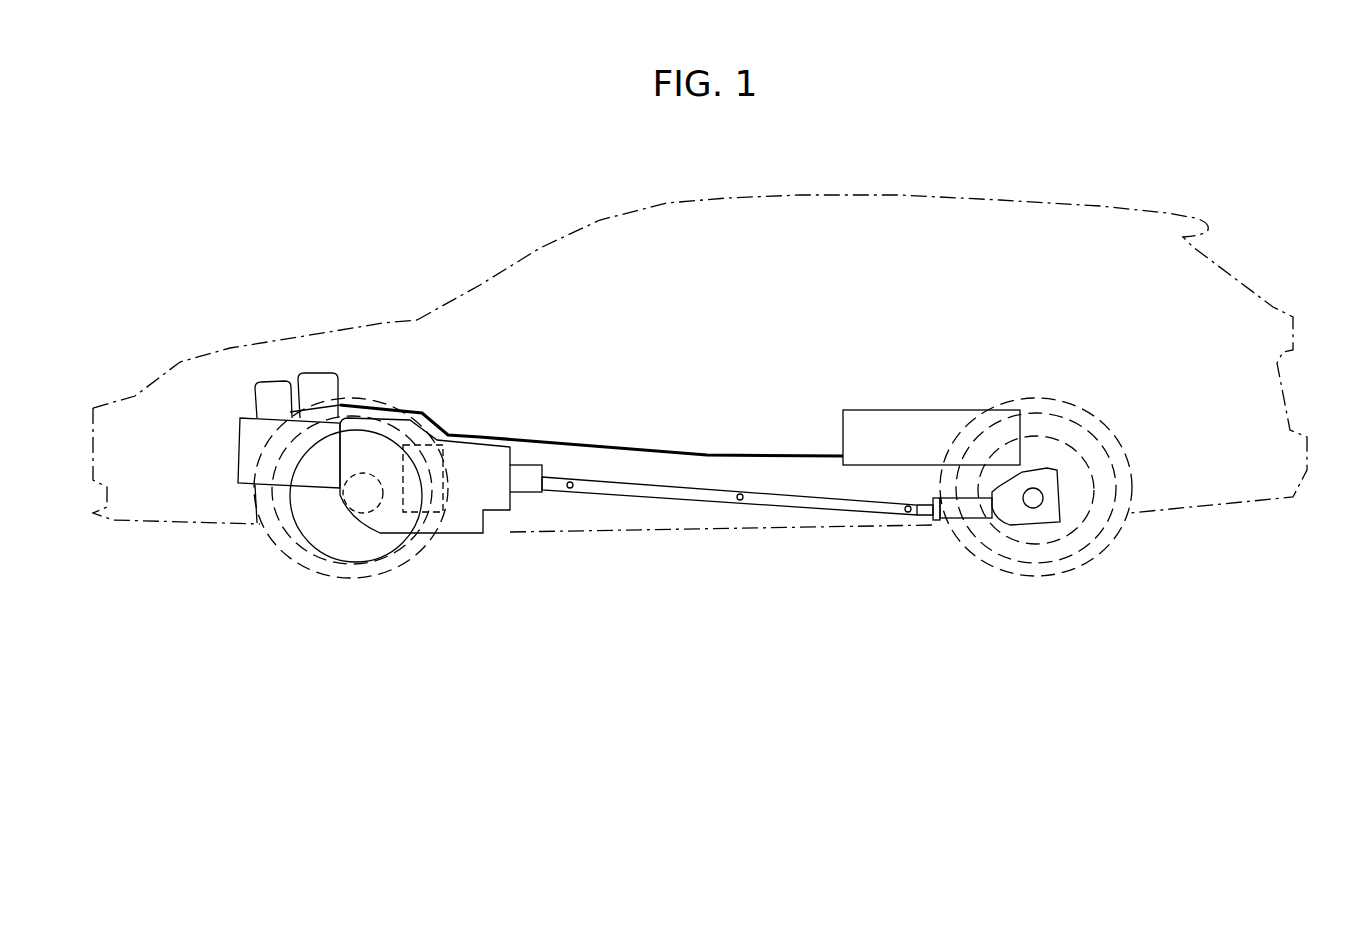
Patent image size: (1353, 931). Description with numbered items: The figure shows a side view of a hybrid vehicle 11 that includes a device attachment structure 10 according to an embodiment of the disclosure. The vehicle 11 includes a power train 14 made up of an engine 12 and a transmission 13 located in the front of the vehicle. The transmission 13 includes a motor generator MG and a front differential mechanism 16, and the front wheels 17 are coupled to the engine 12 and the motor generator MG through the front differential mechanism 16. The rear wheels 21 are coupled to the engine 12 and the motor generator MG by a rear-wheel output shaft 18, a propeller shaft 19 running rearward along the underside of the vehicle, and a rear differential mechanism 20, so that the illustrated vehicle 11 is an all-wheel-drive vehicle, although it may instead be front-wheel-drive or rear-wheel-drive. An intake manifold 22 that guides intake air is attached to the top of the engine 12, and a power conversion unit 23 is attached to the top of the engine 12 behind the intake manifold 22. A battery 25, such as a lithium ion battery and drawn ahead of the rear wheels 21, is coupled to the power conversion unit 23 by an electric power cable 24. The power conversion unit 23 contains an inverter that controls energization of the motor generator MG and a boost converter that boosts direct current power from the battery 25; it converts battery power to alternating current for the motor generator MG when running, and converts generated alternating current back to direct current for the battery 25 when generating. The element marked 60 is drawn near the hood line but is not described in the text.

The device attachment structure 10 is at (333, 408).
The hybrid vehicle 11 is at (215, 224).
The engine 12 is at (242, 436).
The transmission 13 is at (405, 542).
The power train 14 is at (220, 387).
The front differential mechanism 16 is at (363, 512).
The front wheels 17 is at (287, 553).
The rear-wheel output shaft 18 is at (550, 483).
The propeller shaft 19 is at (705, 497).
The rear differential mechanism 20 is at (1010, 518).
The rear wheels 21 is at (1095, 555).
The intake manifold 22 is at (270, 390).
The power conversion unit 23 is at (314, 380).
The electric power cable 24 is at (685, 440).
The battery 25 is at (913, 425).
The hood 60 is at (386, 324).
The motor generator MG is at (422, 515).